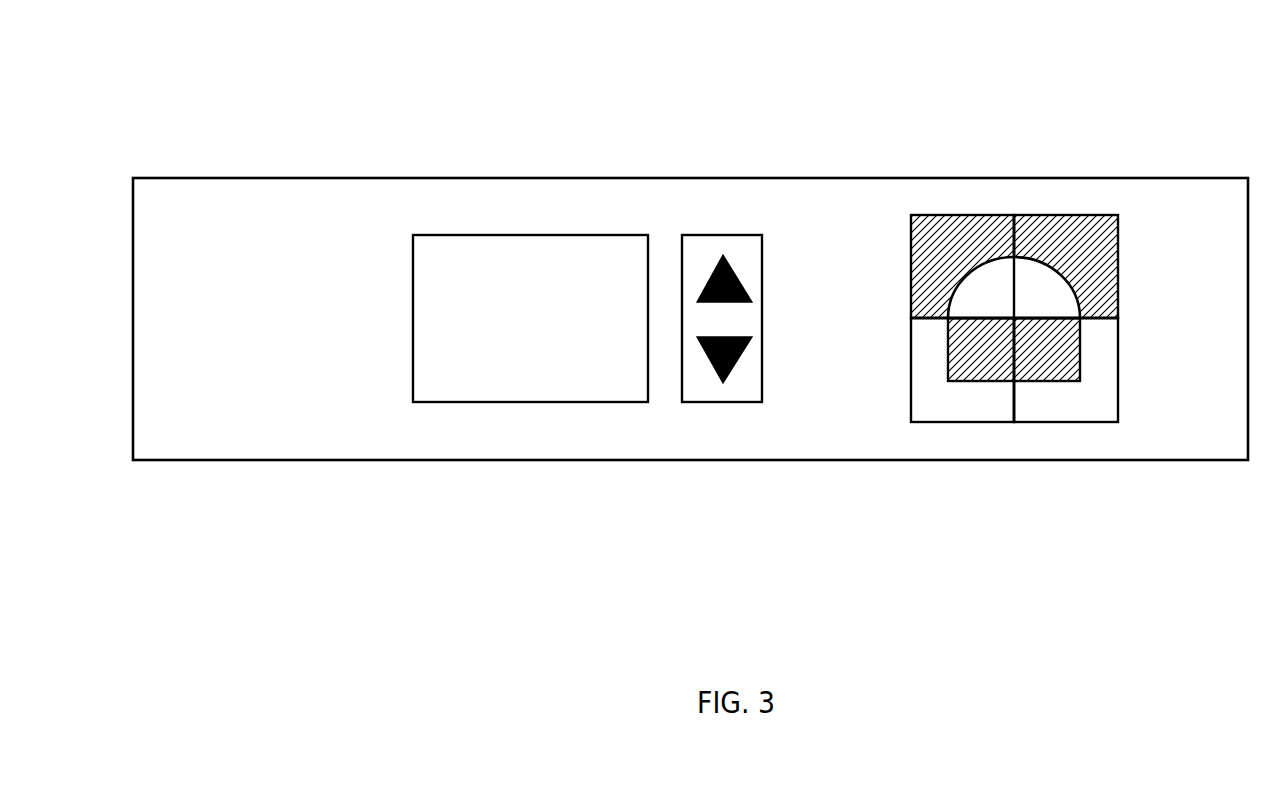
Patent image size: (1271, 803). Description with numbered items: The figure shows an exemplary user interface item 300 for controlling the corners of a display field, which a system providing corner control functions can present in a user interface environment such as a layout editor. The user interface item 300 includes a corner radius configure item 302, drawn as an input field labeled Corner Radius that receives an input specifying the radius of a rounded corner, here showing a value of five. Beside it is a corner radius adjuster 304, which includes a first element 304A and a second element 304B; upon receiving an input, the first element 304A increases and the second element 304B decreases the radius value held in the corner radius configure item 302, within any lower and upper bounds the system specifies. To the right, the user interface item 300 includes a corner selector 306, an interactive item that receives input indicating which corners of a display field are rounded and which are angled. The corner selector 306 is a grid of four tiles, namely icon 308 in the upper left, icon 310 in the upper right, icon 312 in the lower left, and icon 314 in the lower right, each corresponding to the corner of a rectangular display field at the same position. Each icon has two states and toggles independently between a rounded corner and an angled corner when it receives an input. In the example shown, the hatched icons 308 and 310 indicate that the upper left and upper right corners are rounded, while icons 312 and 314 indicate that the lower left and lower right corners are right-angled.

The user interface item 300 is at (200, 99).
The corner radius configure item 302 is at (502, 235).
The corner radius adjuster 304 is at (629, 307).
The first element 304A is at (712, 270).
The second element 304B is at (715, 363).
The corner selector 306 is at (973, 318).
The icon 308 is at (910, 247).
The icon 310 is at (1080, 215).
The icon 312 is at (967, 422).
The icon 314 is at (1060, 422).